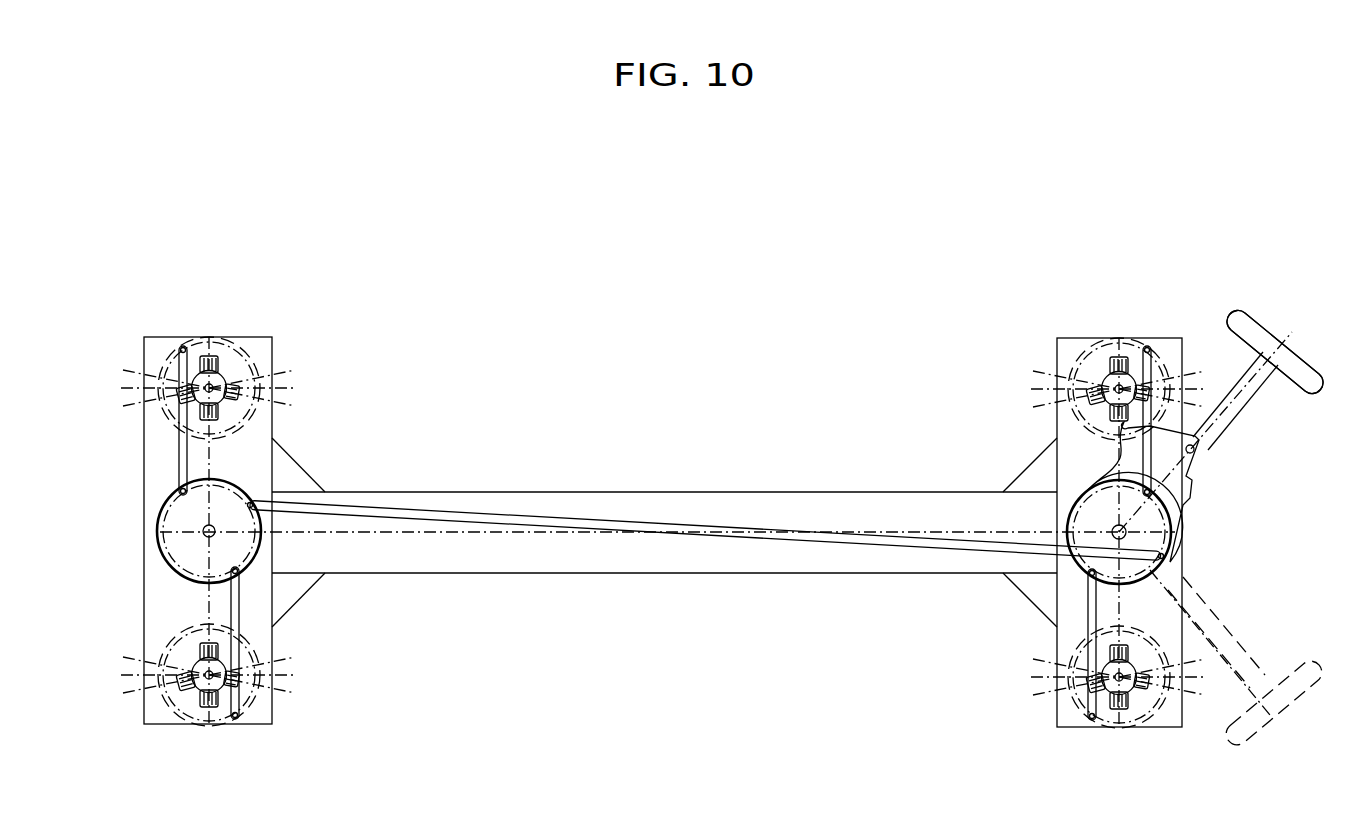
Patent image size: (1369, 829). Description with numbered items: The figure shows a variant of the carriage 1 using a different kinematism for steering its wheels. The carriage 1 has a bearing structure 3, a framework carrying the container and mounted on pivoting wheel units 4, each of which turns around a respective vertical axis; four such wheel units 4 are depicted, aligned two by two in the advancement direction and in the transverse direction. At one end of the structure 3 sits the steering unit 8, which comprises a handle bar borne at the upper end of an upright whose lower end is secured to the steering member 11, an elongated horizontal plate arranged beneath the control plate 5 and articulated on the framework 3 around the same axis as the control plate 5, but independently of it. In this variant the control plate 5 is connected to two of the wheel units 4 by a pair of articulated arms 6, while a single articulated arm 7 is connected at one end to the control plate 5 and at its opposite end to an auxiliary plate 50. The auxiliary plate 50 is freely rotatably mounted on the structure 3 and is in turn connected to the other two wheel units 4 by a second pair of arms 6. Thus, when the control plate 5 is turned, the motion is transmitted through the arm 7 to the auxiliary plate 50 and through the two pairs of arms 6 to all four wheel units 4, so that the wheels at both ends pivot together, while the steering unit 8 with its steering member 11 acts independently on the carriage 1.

The carriage 1 is at (496, 272).
The bearing structure 3 is at (604, 576).
The wheel unit 4 is at (256, 346).
The control plate 5 is at (1208, 510).
The articulated arm 6 is at (178, 453).
The articulated arm 7 is at (561, 518).
The steering unit 8 is at (1290, 336).
The steering member 11 is at (1260, 400).
The auxiliary plate 50 is at (168, 572).